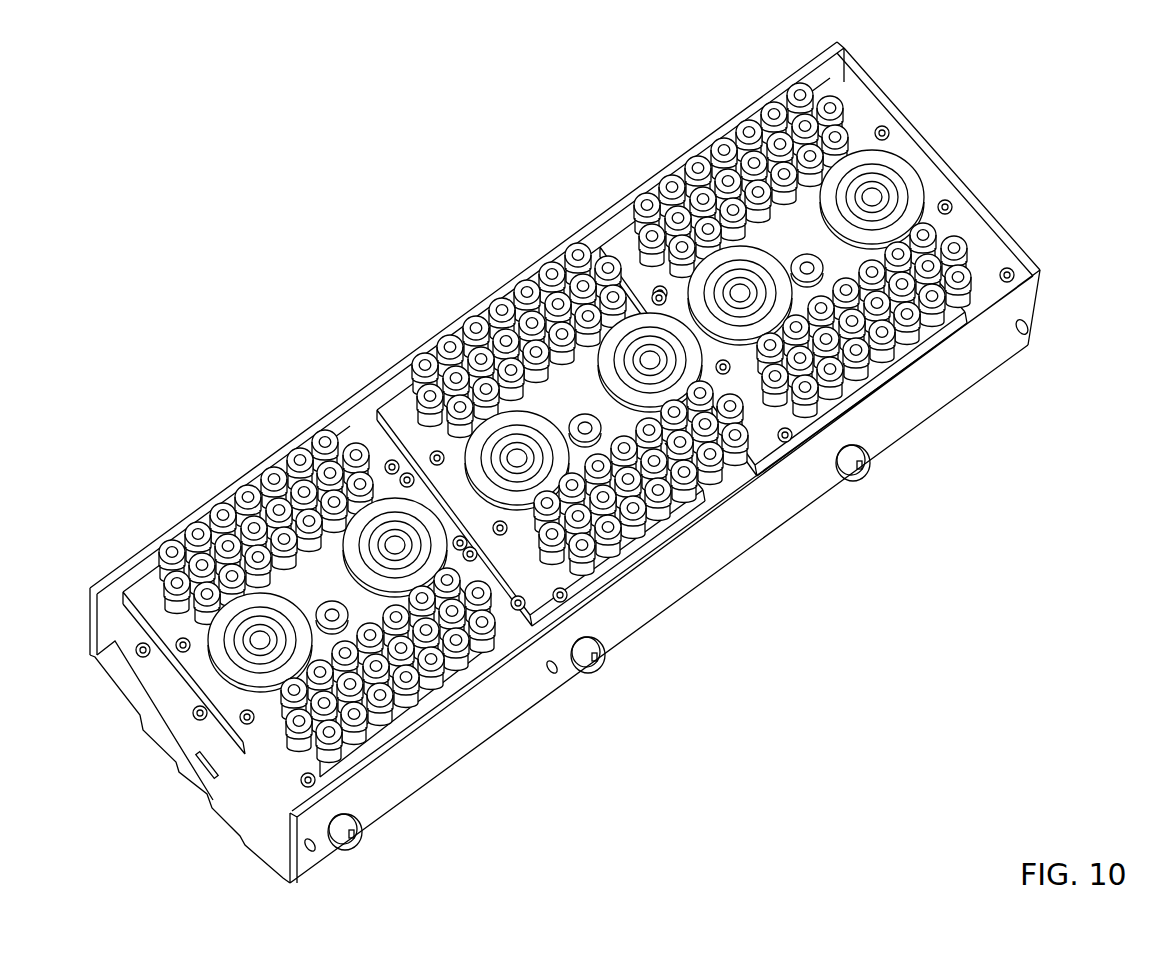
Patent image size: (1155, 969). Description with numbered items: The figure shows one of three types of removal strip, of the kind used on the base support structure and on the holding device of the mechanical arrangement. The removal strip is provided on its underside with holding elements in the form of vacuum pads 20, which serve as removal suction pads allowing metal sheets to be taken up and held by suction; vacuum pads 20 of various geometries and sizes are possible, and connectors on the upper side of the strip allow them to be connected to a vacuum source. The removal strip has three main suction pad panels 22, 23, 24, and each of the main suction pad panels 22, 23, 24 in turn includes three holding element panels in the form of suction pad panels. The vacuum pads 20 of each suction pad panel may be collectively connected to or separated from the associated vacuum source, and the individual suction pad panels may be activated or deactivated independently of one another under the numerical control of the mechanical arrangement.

The vacuum pads 20 is at (222, 505).
The main suction pad panel 22 is at (942, 330).
The main suction pad panel 23 is at (714, 497).
The main suction pad panel 24 is at (436, 702).